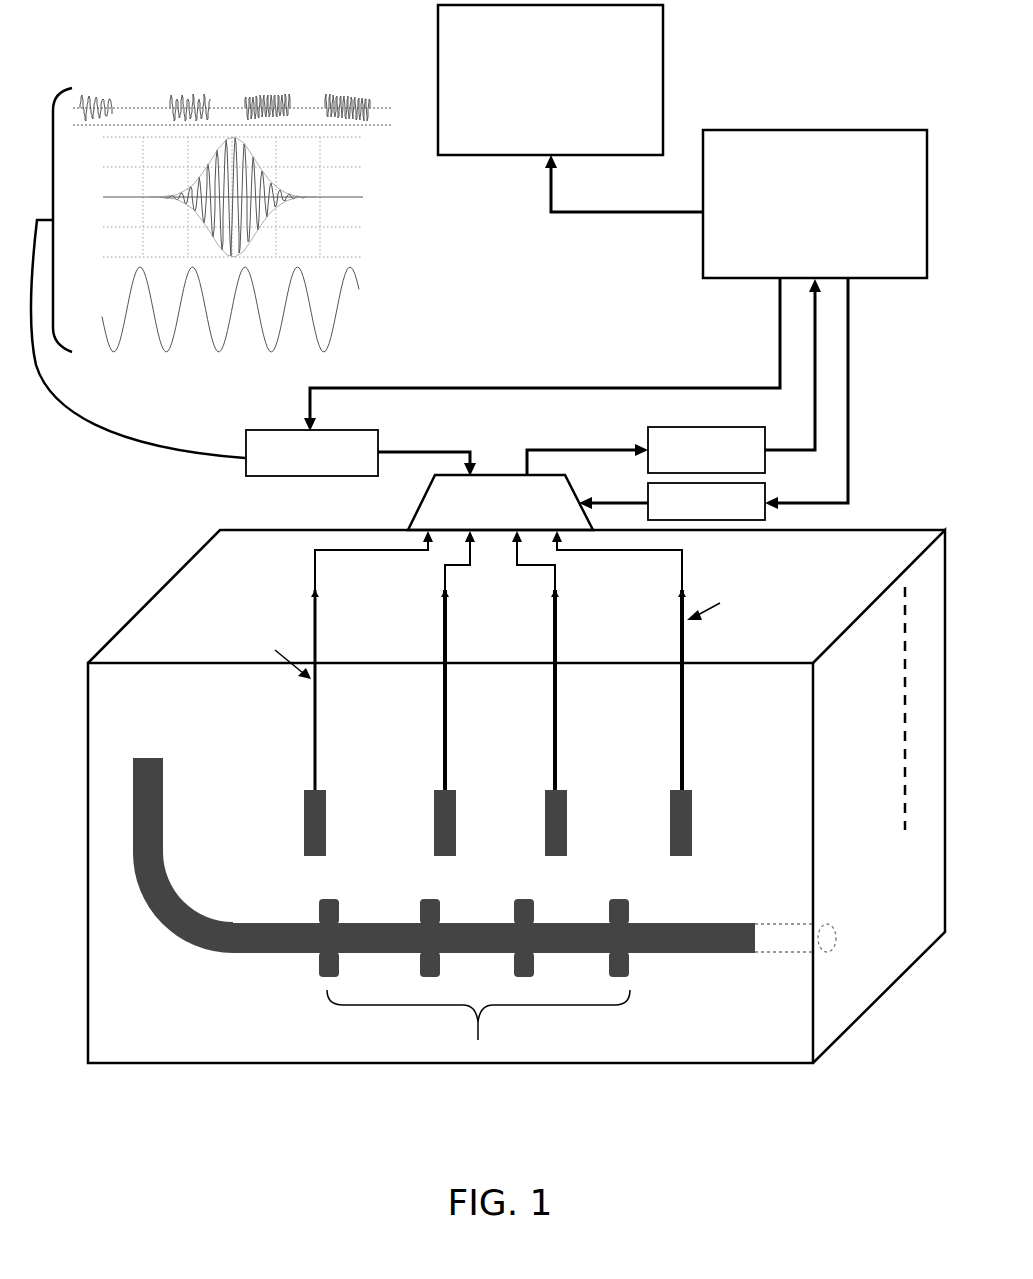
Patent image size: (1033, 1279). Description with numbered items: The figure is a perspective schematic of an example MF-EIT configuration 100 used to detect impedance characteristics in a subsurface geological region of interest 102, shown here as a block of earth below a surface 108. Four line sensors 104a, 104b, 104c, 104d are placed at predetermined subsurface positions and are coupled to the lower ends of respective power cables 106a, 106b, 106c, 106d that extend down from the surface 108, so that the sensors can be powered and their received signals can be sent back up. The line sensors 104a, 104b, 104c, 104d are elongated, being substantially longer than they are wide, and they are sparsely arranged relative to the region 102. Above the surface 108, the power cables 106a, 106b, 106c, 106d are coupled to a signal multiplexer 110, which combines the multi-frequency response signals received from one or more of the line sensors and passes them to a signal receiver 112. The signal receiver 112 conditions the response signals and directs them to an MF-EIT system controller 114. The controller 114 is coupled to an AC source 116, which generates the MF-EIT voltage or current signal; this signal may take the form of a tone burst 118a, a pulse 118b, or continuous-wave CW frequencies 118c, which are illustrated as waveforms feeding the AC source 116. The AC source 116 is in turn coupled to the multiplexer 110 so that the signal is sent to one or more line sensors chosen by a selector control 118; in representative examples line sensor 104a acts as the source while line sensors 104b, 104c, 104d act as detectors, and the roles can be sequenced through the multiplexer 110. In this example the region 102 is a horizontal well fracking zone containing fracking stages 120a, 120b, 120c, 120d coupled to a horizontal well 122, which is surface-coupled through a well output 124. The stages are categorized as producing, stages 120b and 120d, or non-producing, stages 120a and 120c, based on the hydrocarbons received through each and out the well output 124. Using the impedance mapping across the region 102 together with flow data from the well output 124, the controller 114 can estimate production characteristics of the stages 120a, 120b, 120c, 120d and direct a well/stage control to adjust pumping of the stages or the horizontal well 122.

The MF-EIT configuration 100 is at (830, 35).
The subsurface geological region of interest 102 is at (744, 1042).
The line sensor 104a is at (303, 820).
The line sensor 104b is at (434, 820).
The line sensor 104c is at (544, 828).
The line sensor 104d is at (670, 826).
The power cable 106a is at (312, 730).
The power cable 106b is at (440, 718).
The power cable 106c is at (552, 706).
The power cable 106d is at (675, 720).
The surface 108 is at (249, 599).
The signal multiplexer 110 is at (500, 475).
The signal receiver 112 is at (690, 427).
The MF-EIT system controller 114 is at (815, 204).
The AC source 116 is at (338, 430).
The selector control 118 is at (765, 490).
The tone burst 118a is at (195, 52).
The pulse 118b is at (318, 165).
The CW frequencies 118c is at (343, 247).
The fracking stage 120a is at (320, 956).
The fracking stage 120b is at (420, 958).
The fracking stage 120c is at (537, 960).
The fracking stage 120d is at (632, 960).
The horizontal well 122 is at (688, 924).
The well output 124 is at (163, 785).